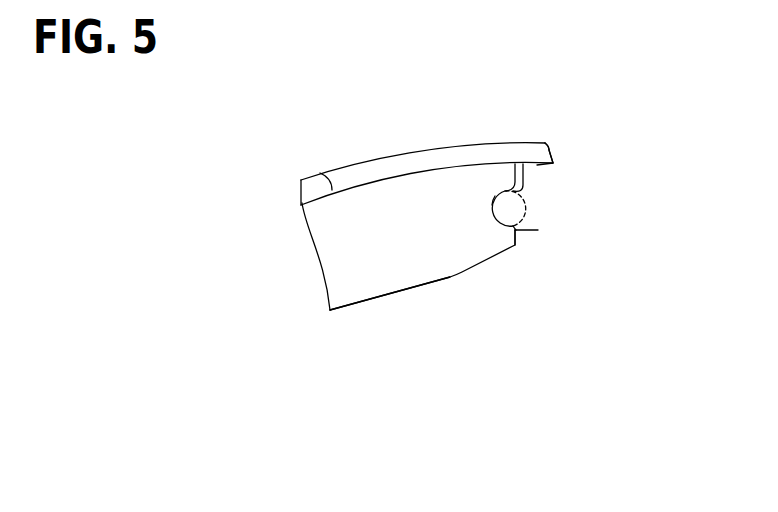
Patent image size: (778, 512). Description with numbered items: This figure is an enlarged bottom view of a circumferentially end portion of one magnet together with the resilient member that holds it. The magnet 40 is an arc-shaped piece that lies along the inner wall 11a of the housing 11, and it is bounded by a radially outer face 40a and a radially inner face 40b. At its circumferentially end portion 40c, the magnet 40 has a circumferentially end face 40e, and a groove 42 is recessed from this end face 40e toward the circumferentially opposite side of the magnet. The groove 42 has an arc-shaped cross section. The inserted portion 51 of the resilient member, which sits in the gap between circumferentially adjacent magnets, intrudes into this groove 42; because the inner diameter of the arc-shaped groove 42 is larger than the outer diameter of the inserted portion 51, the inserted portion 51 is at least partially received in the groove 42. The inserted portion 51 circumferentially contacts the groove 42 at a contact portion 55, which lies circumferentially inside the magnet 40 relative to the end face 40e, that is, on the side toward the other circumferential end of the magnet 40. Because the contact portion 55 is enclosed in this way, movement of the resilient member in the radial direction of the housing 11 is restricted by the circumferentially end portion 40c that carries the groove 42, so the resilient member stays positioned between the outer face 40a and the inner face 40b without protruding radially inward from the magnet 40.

The housing 11 is at (345, 167).
The inner wall of housing 11a is at (537, 165).
The groove 42 is at (523, 164).
The inserted portion 51 is at (528, 208).
The contact portion 55 is at (493, 197).
The magnet 40 is at (328, 257).
The radially outer face of magnet 40a is at (320, 173).
The radially inner face of magnet 40b is at (377, 298).
The circumferentially end portion of magnet 40c is at (518, 232).
The circumferentially end face of magnet 40e is at (538, 230).